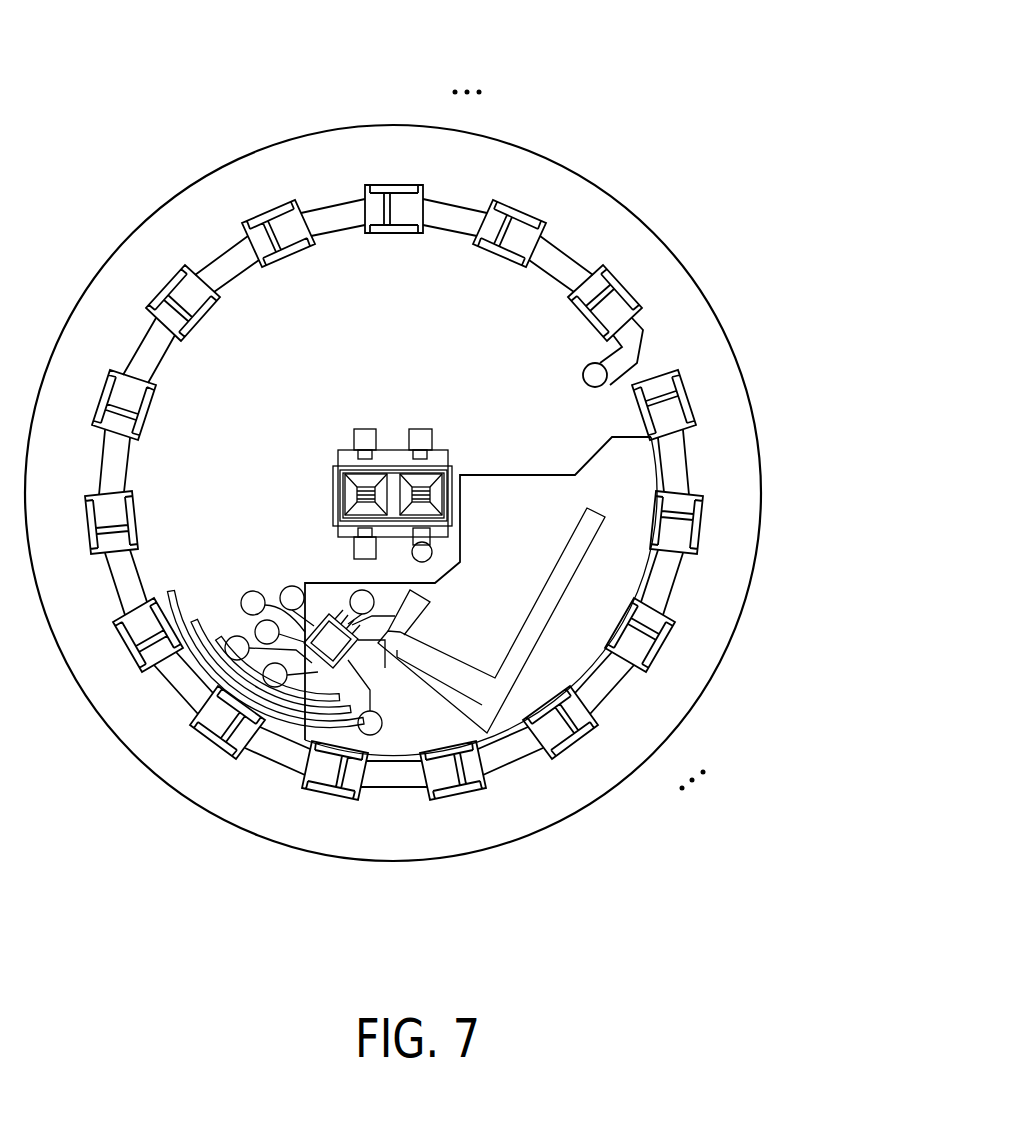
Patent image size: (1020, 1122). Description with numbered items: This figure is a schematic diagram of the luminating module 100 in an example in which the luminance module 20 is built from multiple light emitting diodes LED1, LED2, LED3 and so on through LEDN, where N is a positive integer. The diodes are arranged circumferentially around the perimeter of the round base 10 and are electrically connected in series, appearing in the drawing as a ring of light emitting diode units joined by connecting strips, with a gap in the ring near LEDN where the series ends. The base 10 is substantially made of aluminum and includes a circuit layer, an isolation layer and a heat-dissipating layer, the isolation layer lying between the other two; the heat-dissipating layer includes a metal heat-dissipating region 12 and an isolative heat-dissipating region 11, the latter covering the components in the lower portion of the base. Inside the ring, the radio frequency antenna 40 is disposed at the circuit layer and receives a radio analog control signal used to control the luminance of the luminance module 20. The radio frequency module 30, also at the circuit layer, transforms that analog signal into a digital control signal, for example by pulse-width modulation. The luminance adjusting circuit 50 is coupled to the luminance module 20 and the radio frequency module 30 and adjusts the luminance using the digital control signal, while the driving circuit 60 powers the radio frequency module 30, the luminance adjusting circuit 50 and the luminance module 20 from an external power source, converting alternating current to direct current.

The luminating module 100 is at (770, 84).
The base 10 is at (358, 125).
The isolative heat-dissipating region 11 is at (583, 643).
The metal heat-dissipating region 12 is at (338, 314).
The luminance module 20 is at (538, 237).
The radio frequency module 30 is at (320, 637).
The radio frequency antenna 40 is at (557, 580).
The luminance adjusting circuit 50 is at (422, 495).
The driving circuit 60 is at (360, 440).
The light emitting diode LED1 is at (688, 398).
The light emitting diode LED2 is at (700, 527).
The light emitting diode LED3 is at (662, 660).
The light emitting diode LEDN is at (613, 278).